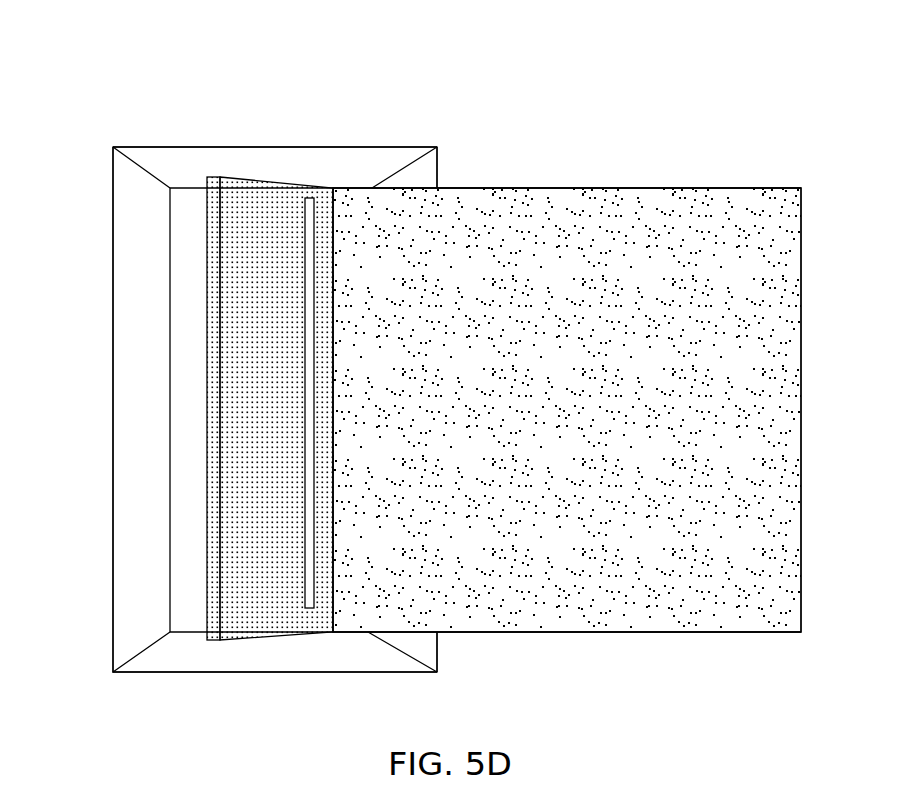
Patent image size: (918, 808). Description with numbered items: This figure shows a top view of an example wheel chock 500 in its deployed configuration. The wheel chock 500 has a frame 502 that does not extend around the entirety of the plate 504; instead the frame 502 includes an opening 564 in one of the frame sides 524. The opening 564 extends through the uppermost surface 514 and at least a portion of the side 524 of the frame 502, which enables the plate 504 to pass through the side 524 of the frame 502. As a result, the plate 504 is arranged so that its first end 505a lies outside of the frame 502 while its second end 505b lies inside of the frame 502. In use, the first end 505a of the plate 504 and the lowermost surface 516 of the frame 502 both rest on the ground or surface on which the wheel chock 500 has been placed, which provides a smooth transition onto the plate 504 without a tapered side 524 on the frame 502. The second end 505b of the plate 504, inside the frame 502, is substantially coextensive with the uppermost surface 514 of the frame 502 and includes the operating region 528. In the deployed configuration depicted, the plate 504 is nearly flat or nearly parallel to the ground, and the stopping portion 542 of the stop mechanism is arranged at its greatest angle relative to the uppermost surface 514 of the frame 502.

The wheel chock 500 is at (128, 63).
The frame 502 is at (218, 158).
The plate 504 is at (606, 210).
The first end 505a is at (730, 218).
The second end 505b is at (380, 595).
The uppermost surface 514 is at (170, 383).
The lowermost surface 516 is at (273, 147).
The frame side 524 is at (395, 152).
The operating region 528 is at (383, 508).
The stopping portion 542 is at (183, 658).
The opening 564 is at (416, 188).